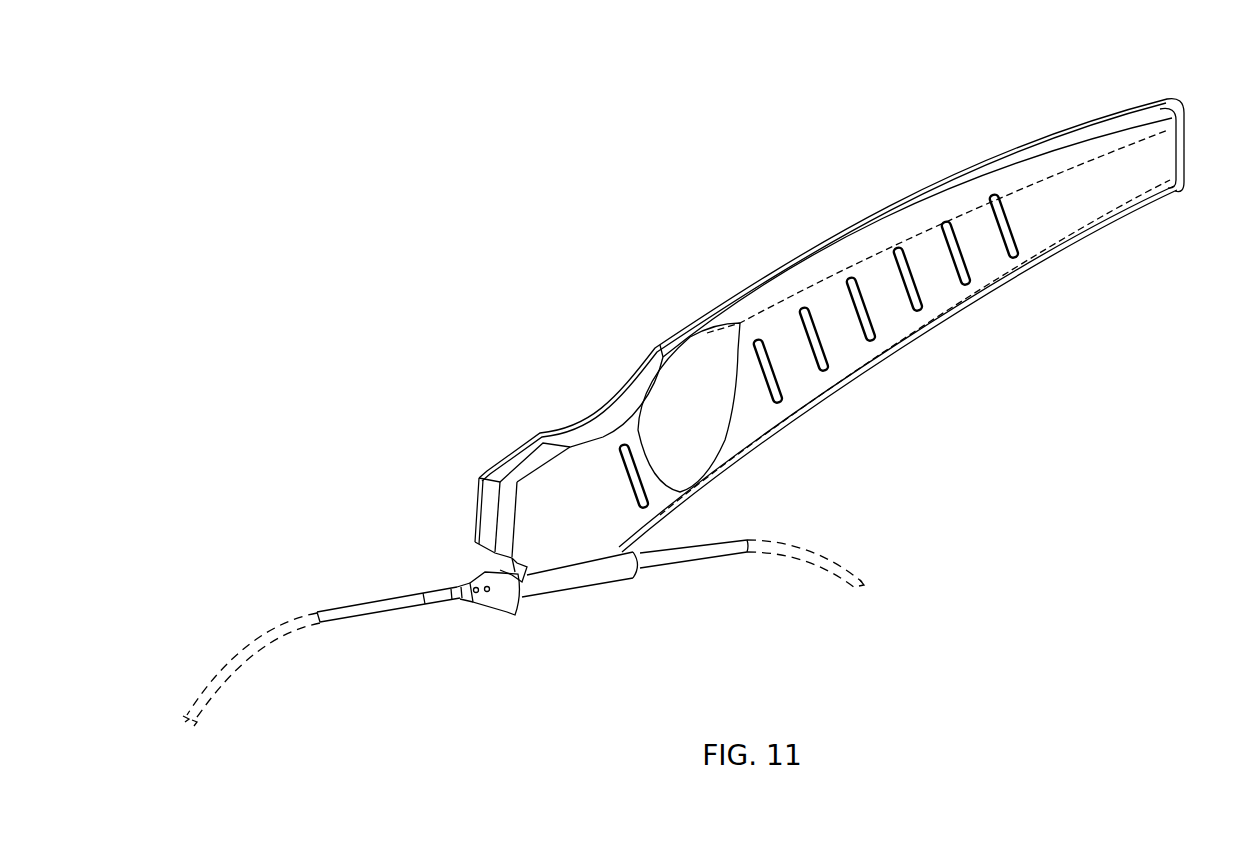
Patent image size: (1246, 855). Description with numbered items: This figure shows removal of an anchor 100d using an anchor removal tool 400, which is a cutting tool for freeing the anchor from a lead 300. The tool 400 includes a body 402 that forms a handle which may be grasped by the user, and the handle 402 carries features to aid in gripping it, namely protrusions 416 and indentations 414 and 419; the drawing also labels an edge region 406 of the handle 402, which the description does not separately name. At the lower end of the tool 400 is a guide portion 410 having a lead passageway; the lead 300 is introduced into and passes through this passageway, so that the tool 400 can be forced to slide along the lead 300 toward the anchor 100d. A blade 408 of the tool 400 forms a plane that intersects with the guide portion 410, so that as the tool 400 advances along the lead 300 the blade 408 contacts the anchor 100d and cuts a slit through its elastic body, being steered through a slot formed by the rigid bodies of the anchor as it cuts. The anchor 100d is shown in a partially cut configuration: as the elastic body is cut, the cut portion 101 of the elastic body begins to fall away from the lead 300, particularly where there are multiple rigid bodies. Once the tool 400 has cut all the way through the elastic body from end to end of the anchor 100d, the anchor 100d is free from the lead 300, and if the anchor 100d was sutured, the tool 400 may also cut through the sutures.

The anchor removal tool 400 is at (812, 157).
The body 402 is at (1042, 137).
The housing rim 406 is at (825, 237).
The protrusions 416 is at (1037, 260).
The indentations 414 is at (633, 417).
The indentations 419 is at (698, 443).
The blade 408 is at (485, 553).
The cut portion 101 is at (506, 610).
The anchor 100d is at (458, 586).
The lead 300 is at (356, 611).
The guide portion 410 is at (634, 579).